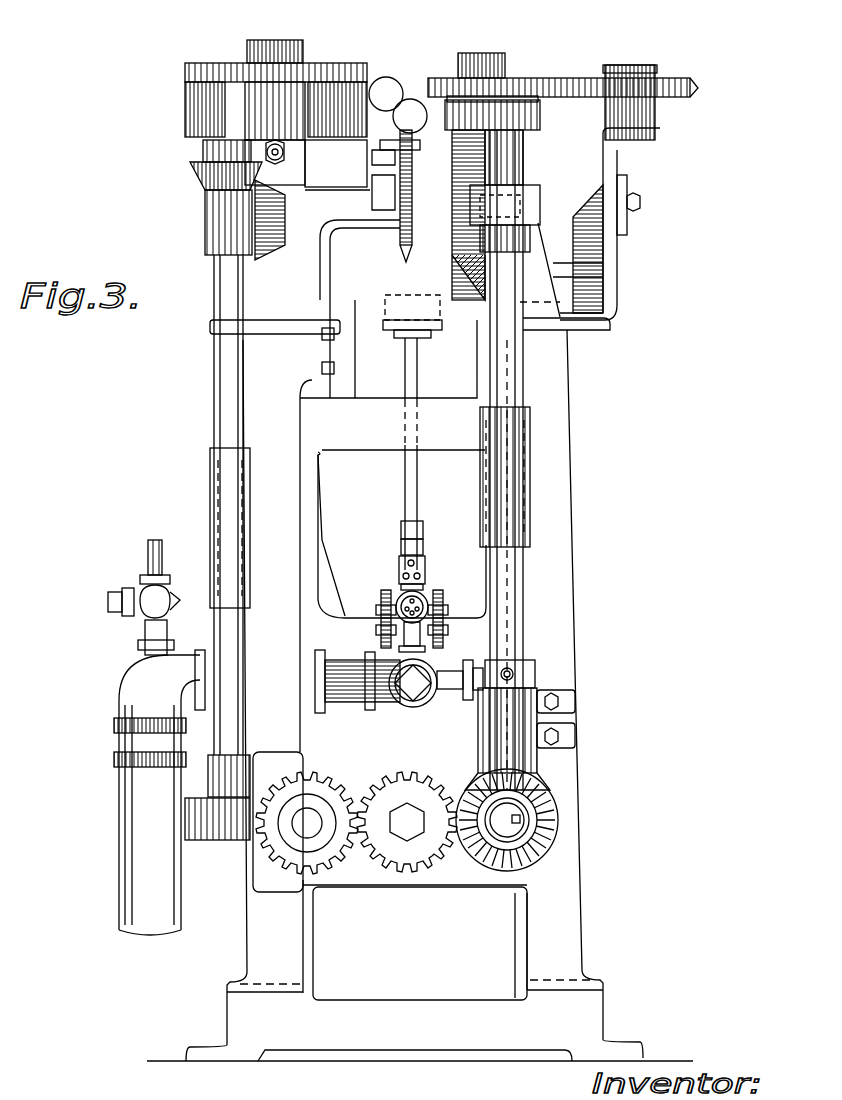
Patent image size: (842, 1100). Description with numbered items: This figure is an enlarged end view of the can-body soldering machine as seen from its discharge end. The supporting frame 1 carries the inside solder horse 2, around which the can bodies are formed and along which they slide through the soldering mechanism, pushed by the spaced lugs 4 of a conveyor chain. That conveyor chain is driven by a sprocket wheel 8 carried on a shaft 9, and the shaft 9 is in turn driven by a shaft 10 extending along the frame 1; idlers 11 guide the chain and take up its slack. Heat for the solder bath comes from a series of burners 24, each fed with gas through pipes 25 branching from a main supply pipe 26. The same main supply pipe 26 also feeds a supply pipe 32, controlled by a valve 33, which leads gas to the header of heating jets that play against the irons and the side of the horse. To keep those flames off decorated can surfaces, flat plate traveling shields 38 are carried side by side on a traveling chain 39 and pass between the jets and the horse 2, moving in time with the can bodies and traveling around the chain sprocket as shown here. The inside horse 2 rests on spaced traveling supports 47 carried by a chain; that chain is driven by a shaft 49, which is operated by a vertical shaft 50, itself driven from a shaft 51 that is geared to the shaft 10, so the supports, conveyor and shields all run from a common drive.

The supporting frame 1 is at (555, 320).
The inside solder horse 2 is at (380, 84).
The lugs 4 is at (680, 92).
The sprocket wheel 8 is at (470, 100).
The shaft 9 is at (515, 625).
The shaft 10 is at (540, 824).
The idlers 11 is at (624, 80).
The burners 24 is at (404, 306).
The pipes 25 is at (410, 356).
The main supply pipe 26 is at (395, 708).
The supply pipe 32 is at (148, 560).
The valve 33 is at (108, 604).
The traveling shields 38 is at (196, 100).
The traveling chain 39 is at (205, 68).
The traveling supports 47 is at (400, 240).
The shaft 49 is at (250, 220).
The vertical shaft 50 is at (228, 372).
The shaft 51 is at (302, 828).